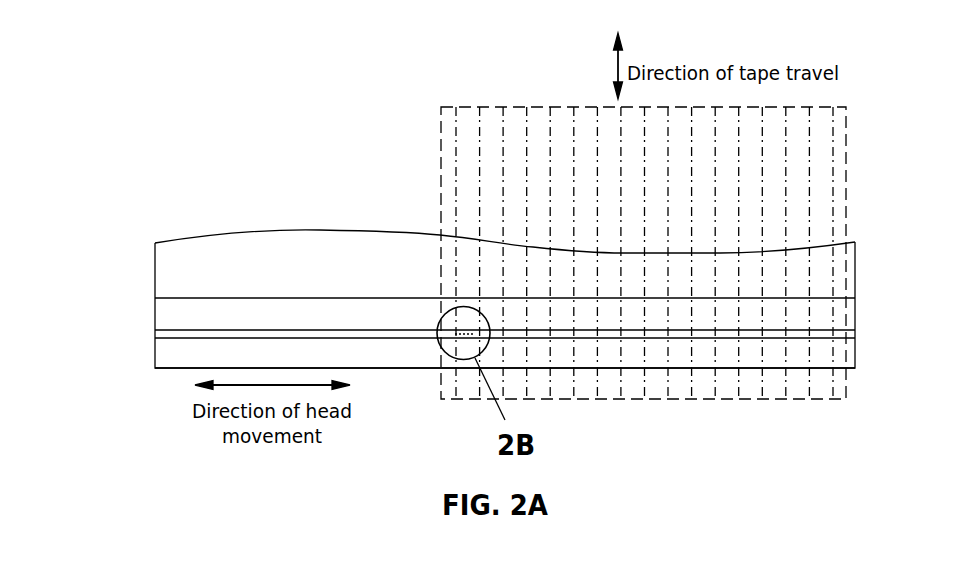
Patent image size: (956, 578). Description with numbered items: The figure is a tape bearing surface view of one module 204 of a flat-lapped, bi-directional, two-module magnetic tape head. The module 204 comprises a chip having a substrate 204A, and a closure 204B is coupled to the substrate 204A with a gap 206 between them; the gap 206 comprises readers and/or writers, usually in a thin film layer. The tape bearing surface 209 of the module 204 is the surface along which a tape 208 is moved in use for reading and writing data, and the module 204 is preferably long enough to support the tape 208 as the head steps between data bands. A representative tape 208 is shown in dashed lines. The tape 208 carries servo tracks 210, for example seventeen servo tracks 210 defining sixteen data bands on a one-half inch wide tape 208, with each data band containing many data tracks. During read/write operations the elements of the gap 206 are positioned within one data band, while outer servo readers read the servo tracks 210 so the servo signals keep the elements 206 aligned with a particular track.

The module 204 is at (458, 300).
The substrate 204A is at (288, 232).
The closure 204B is at (155, 355).
The gap 206 is at (436, 333).
The tape 208 is at (441, 108).
The tape bearing surface 209 is at (345, 318).
The servo tracks 210 is at (523, 197).